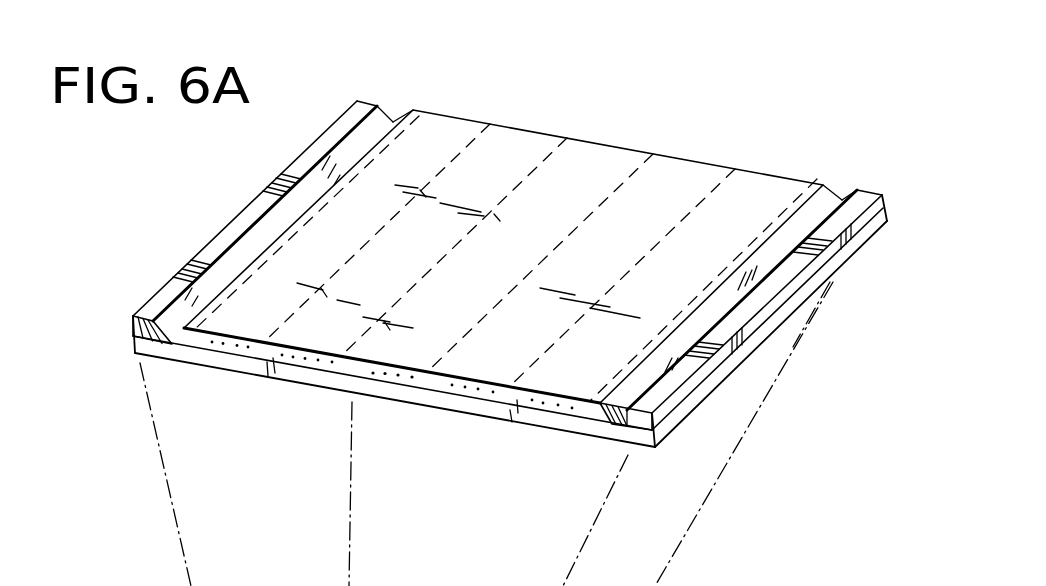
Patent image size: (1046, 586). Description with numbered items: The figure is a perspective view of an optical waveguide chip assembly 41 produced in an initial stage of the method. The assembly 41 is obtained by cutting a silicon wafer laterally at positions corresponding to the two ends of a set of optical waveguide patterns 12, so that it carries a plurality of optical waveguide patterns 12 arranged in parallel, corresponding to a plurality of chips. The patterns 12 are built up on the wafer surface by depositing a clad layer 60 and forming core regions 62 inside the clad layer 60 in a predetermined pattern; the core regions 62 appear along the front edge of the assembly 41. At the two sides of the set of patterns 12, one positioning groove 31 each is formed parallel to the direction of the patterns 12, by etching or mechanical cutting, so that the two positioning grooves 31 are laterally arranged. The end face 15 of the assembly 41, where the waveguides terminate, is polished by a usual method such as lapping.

The optical waveguide pattern 12 is at (518, 152).
The optical waveguide chip assembly 41 is at (675, 185).
The positioning groove 31 is at (192, 297).
The clad layer 60 is at (438, 383).
The core region 62 is at (412, 377).
The end face 15 is at (545, 405).